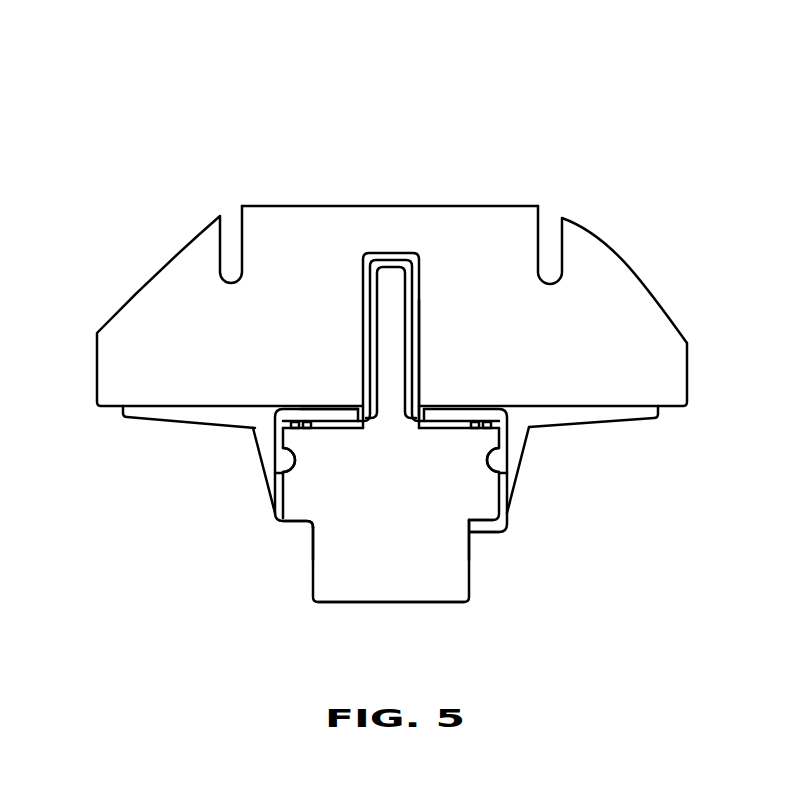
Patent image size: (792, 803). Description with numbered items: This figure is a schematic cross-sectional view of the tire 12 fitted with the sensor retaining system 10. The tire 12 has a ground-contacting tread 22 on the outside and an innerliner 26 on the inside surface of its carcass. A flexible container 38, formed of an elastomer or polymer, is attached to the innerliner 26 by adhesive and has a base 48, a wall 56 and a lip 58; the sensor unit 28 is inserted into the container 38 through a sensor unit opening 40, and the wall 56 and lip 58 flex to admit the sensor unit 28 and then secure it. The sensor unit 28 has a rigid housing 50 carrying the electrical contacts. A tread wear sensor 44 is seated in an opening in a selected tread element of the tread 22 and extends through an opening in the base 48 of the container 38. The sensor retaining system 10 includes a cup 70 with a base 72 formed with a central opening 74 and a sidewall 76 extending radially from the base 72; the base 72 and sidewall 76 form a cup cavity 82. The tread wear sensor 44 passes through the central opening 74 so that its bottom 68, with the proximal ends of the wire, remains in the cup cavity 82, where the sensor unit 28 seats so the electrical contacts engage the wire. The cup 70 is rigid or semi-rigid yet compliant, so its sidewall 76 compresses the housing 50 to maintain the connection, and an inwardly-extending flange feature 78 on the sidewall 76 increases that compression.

The sensor retaining system 10 is at (553, 128).
The tire 12 is at (637, 273).
The tread 22 is at (323, 205).
The tread wear sensor 44 is at (420, 287).
The central opening 74 is at (420, 381).
The base 48 is at (148, 416).
The innerliner 26 is at (628, 420).
The housing 50 is at (278, 503).
The wall 56 is at (268, 453).
The sidewall 76 is at (265, 436).
The base 72 is at (332, 427).
The lip 58 is at (300, 527).
The sensor unit opening 40 is at (309, 532).
The sensor unit 28 is at (467, 603).
The bottom 68 is at (317, 428).
The cup 70 is at (520, 448).
The flange feature 78 is at (500, 462).
The cup cavity 82 is at (502, 443).
The container 38 is at (506, 518).